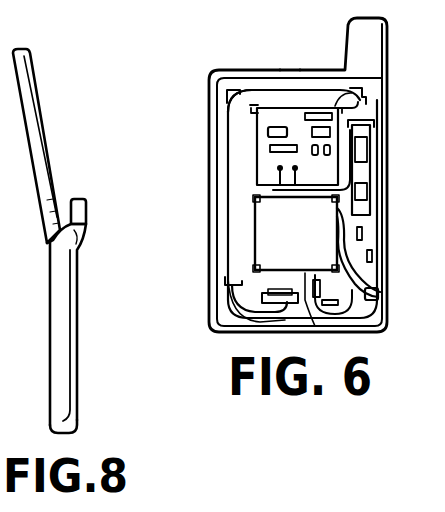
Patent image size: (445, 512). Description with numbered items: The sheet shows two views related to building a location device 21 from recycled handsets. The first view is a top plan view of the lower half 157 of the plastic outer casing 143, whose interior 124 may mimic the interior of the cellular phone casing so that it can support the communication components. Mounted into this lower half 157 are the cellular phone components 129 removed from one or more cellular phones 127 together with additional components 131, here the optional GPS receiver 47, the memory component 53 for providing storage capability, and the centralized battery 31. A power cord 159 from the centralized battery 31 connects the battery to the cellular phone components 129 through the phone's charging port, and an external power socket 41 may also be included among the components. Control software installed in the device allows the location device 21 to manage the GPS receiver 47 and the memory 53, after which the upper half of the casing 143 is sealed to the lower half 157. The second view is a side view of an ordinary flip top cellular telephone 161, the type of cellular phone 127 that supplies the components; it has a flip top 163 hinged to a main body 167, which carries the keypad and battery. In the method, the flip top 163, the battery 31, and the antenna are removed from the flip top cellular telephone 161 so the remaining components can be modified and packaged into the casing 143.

In FIG. 6, the location device 21 is at (396, 182).
In FIG. 6, the battery 31 is at (277, 247).
In FIG. 6, the external power socket 41 is at (380, 294).
In FIG. 6, the GPS receiver 47 is at (276, 124).
In FIG. 6, the memory component 53 is at (368, 191).
In FIG. 6, the interior 124 is at (360, 92).
In FIG. 8, the cellular phone 127 is at (88, 266).
In FIG. 6, the cellular phone component 129 is at (197, 176).
In FIG. 6, the additional component 131 is at (240, 101).
In FIG. 6, the plastic outer casing 143 is at (384, 262).
In FIG. 6, the lower half 157 is at (292, 69).
In FIG. 6, the power cord 159 is at (246, 320).
In FIG. 8, the flip top cellular telephone 161 is at (78, 318).
In FIG. 8, the flip top 163 is at (42, 117).
In FIG. 8, the main body 167 is at (73, 388).